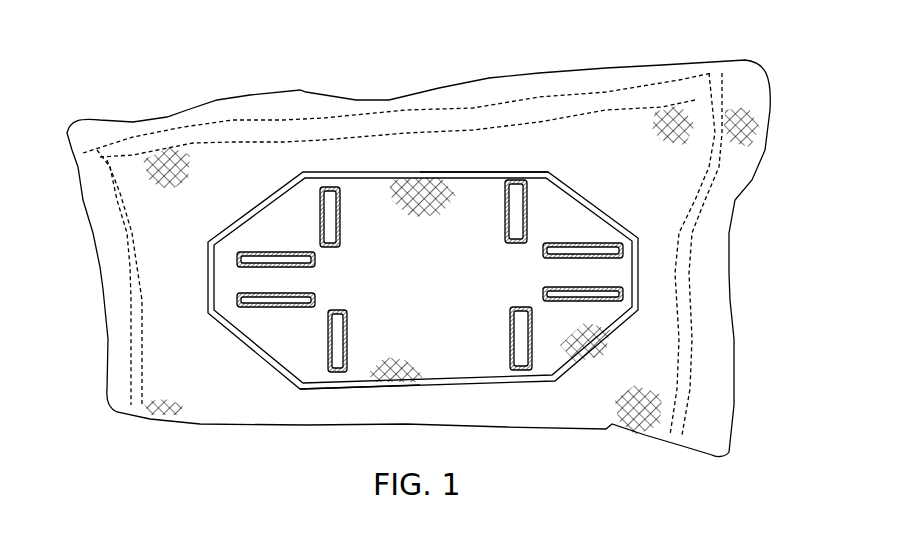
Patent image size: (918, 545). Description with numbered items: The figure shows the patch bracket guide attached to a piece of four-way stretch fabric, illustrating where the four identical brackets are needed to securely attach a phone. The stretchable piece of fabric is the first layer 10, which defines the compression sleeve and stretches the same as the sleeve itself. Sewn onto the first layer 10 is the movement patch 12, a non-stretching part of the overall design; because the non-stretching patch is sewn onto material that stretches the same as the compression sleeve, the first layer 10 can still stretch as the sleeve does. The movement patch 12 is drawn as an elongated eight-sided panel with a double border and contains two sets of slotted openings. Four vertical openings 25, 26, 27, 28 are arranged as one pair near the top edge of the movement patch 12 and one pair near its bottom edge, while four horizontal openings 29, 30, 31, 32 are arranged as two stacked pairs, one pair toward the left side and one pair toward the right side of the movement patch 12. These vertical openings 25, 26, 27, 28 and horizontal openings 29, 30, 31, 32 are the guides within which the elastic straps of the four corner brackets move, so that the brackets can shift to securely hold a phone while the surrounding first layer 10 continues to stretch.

The first layer 10 is at (150, 218).
The movement patch 12 is at (306, 179).
The vertical opening 25 is at (338, 178).
The vertical opening 26 is at (499, 168).
The vertical opening 27 is at (323, 388).
The vertical opening 28 is at (519, 374).
The horizontal opening 29 is at (282, 245).
The horizontal opening 30 is at (578, 230).
The horizontal opening 31 is at (272, 320).
The horizontal opening 32 is at (562, 307).